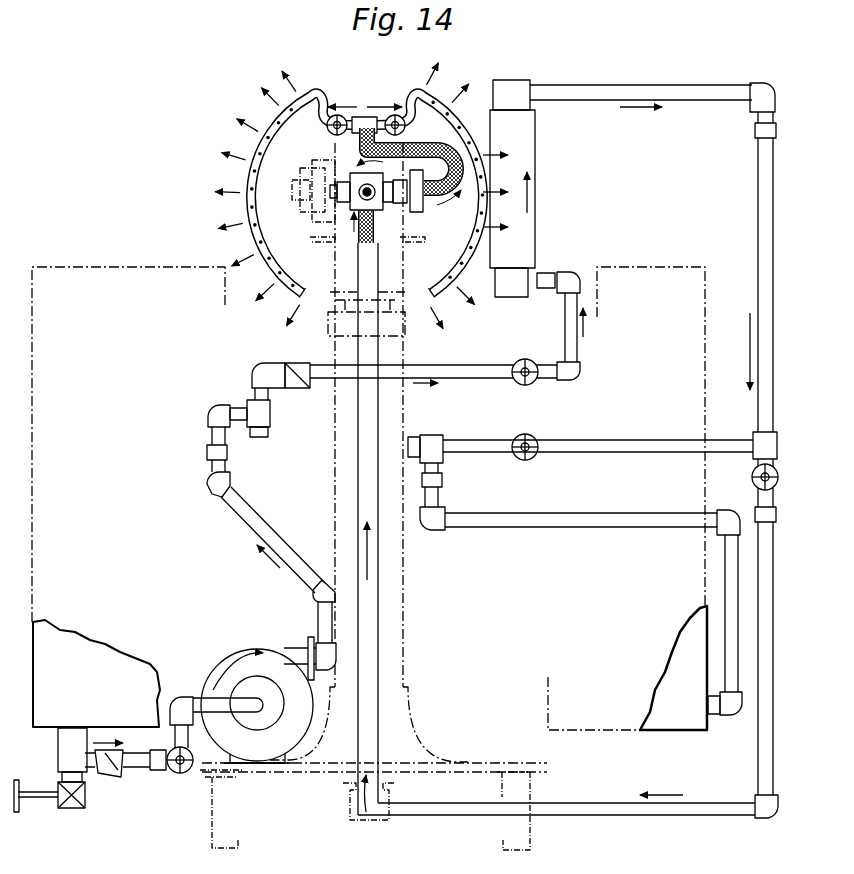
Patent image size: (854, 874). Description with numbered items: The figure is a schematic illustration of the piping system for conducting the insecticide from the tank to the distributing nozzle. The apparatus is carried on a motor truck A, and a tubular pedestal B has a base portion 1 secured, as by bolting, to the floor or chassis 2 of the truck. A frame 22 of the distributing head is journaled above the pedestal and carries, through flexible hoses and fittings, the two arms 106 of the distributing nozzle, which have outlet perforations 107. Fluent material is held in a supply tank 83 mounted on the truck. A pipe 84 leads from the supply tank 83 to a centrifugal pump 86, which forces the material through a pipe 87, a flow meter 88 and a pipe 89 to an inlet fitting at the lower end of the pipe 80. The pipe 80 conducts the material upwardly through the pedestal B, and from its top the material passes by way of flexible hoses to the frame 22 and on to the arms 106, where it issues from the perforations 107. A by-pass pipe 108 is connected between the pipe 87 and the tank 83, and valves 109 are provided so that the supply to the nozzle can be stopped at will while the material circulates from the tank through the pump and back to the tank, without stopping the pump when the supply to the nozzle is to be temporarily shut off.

The base portion 1 is at (416, 729).
The floor or chassis 2 is at (490, 768).
The motor truck A is at (231, 840).
The pedestal B is at (404, 608).
The frame 22 is at (319, 155).
The pipe 80 is at (380, 629).
The supply tank 83 is at (78, 650).
The pipe 84 is at (137, 766).
The centrifugal pump 86 is at (230, 660).
The pipe 87 is at (210, 438).
The flow meter 88 is at (532, 252).
The pipe 89 is at (604, 806).
The arms of the distributing nozzle 106 is at (260, 154).
The outlet perforations 107 is at (279, 102).
The by-pass pipe 108 is at (615, 527).
The valves 109 is at (533, 385).